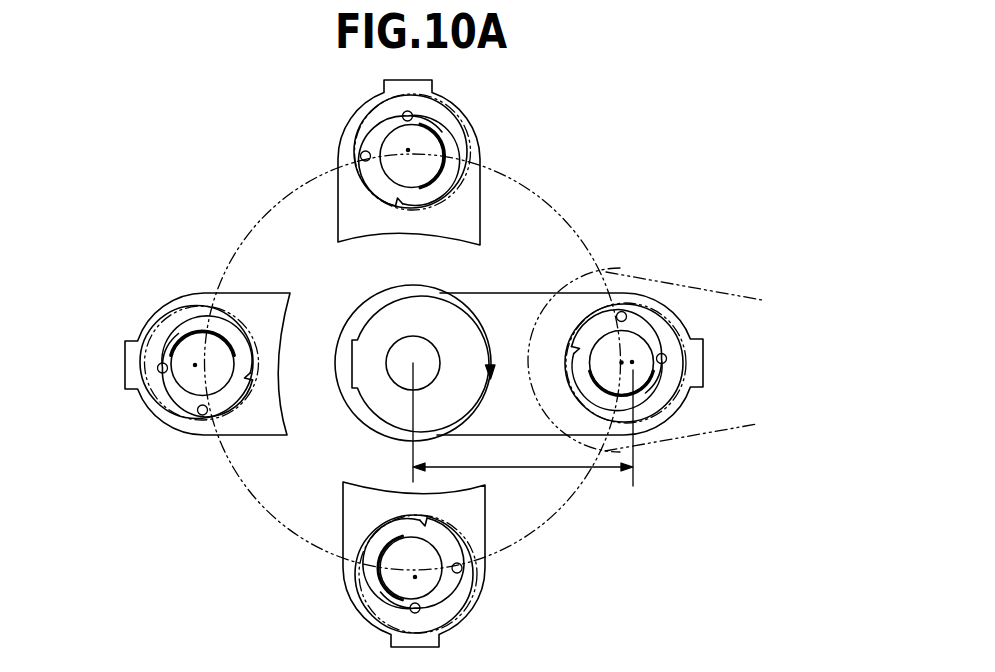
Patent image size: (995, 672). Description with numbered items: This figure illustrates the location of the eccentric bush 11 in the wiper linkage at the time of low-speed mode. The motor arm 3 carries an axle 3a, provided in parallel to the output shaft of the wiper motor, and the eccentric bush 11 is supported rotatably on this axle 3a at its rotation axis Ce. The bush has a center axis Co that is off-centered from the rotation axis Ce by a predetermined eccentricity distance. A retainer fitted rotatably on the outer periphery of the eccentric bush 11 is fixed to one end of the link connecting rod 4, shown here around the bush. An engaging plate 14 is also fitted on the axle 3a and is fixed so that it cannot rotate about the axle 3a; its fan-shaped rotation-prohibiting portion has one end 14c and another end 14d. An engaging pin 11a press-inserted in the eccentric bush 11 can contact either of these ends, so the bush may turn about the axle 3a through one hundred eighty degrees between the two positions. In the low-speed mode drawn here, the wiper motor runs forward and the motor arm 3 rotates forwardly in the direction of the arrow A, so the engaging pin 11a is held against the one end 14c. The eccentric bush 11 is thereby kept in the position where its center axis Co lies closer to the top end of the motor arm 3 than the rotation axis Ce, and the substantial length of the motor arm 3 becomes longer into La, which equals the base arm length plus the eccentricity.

The motor arm 3 is at (507, 292).
The axle 3a is at (420, 174).
The link connecting rod 4 is at (727, 430).
The eccentric bush 11 is at (658, 398).
The engaging pin 11a is at (413, 116).
The engaging plate 14 is at (372, 142).
The one end of the rotation-prohibiting portion 14c is at (672, 352).
The another end of the rotation-prohibiting portion 14d is at (253, 360).
The center axis Co is at (410, 150).
The rotation axis Ce is at (621, 361).
The substantial length of the motor arm La is at (523, 424).
The arrow A is at (496, 351).